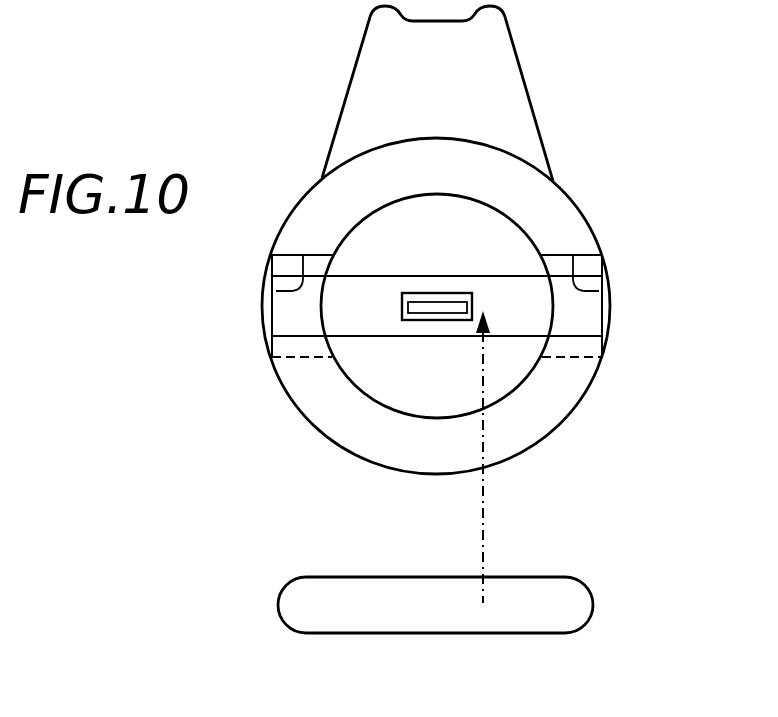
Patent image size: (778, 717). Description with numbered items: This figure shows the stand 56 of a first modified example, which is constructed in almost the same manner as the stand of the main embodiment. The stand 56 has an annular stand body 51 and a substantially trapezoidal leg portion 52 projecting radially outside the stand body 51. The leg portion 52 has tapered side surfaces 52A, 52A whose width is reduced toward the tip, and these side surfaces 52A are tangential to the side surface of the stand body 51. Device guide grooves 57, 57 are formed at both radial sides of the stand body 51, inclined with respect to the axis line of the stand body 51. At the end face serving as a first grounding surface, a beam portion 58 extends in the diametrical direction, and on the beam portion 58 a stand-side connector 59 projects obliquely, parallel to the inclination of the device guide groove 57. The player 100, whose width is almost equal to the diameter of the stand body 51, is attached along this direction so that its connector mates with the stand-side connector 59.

The stand body 51 is at (318, 210).
The leg portion 52 is at (497, 42).
The side surfaces 52A is at (355, 70).
The stand 56 is at (439, 304).
The device guide grooves 57 is at (276, 291).
The beam portion 58 is at (510, 324).
The stand-side connector 59 is at (427, 313).
The player 100 is at (579, 591).